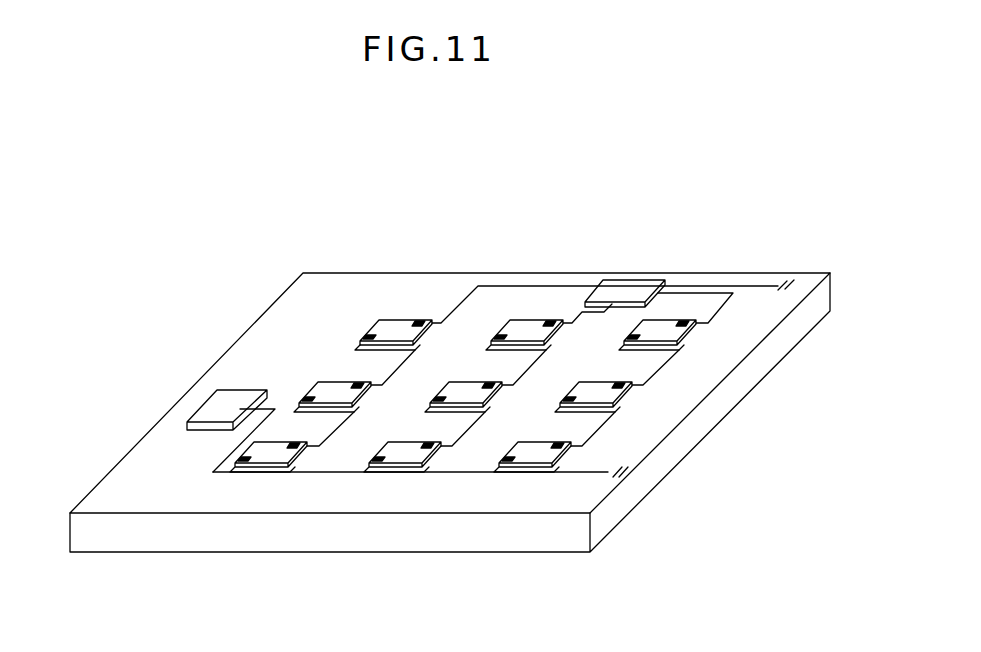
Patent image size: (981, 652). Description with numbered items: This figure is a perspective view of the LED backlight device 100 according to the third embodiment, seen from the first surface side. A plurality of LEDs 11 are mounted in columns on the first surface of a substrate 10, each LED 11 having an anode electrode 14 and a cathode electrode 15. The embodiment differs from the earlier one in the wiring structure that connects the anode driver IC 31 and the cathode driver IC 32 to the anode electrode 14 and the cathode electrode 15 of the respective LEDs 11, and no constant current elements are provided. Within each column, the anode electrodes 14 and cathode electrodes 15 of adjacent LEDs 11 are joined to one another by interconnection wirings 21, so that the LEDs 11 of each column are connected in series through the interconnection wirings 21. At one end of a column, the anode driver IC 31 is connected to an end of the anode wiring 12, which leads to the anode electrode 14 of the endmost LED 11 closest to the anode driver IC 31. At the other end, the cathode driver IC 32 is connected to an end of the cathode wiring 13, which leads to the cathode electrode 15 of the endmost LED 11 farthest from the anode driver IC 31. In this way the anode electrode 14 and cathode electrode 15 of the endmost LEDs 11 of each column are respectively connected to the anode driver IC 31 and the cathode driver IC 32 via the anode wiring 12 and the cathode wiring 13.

The electronic component mounting module 100 is at (697, 205).
The substrate 10 is at (632, 510).
The LED 11 is at (324, 278).
The anode wiring 12 is at (503, 341).
The cathode wiring 13 is at (233, 445).
The anode electrode 14 is at (432, 266).
The cathode electrode 15 is at (308, 328).
The interconnection wiring 21 is at (400, 367).
The anode driver IC 31 is at (633, 291).
The cathode driver IC 32 is at (198, 405).